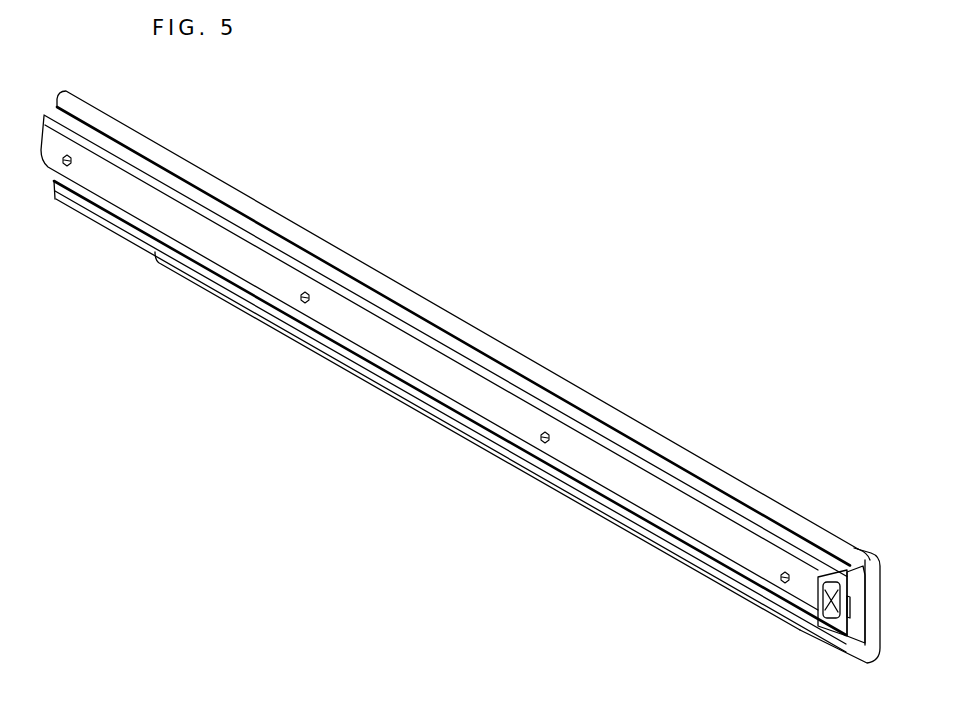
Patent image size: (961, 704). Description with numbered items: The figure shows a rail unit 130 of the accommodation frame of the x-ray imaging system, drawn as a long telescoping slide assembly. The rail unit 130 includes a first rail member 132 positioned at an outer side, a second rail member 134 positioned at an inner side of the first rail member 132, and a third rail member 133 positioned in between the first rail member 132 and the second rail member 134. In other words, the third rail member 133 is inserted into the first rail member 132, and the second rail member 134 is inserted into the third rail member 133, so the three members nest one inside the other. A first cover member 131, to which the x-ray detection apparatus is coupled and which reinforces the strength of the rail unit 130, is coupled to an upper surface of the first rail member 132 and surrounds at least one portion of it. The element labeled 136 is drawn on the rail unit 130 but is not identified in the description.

The rail unit 130 is at (490, 377).
The first cover member 131 is at (882, 641).
The first rail member 132 is at (858, 548).
The third rail member 133 is at (843, 541).
The second rail member 134 is at (828, 552).
The inner rail member 136 is at (748, 547).